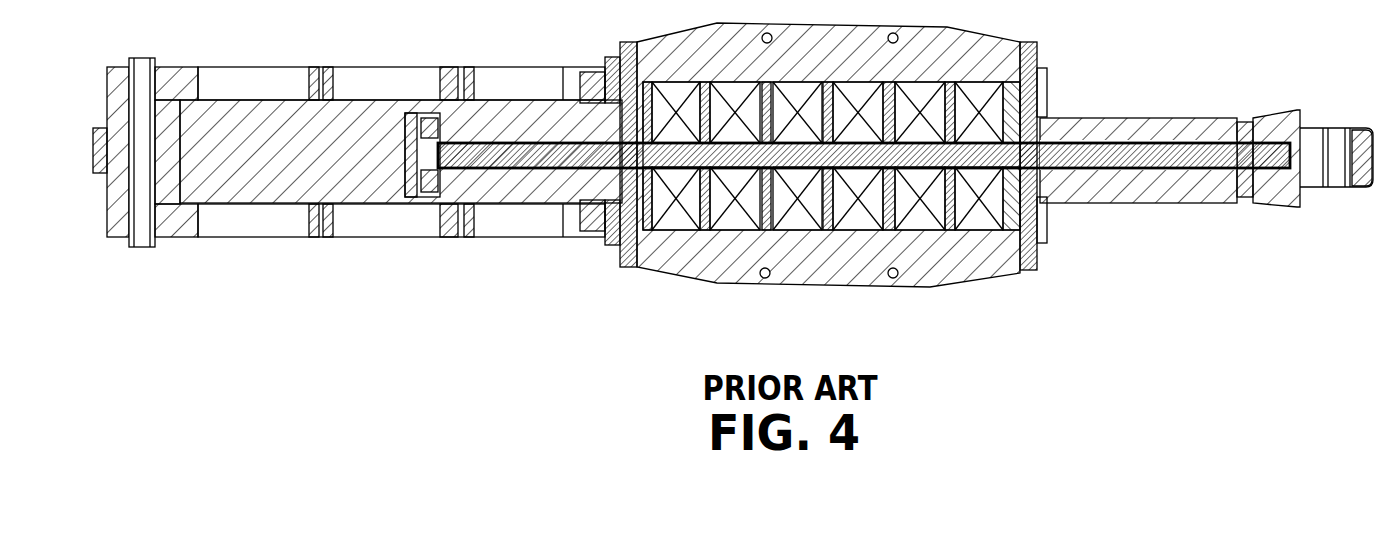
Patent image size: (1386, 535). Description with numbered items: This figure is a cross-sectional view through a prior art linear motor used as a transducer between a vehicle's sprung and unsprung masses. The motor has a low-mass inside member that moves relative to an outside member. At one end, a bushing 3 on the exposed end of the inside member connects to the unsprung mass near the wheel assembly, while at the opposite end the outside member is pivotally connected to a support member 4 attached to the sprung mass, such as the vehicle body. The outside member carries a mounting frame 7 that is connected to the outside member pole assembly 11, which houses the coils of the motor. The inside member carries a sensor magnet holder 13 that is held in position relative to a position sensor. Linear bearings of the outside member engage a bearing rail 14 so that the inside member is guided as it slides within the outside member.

The bushing 3 is at (1352, 190).
The support member 4 is at (93, 143).
The mounting frame 7 is at (375, 240).
The outside member pole assembly 11 is at (692, 280).
The sensor magnet holder 13 is at (1135, 118).
The bearing rail 14 is at (852, 235).